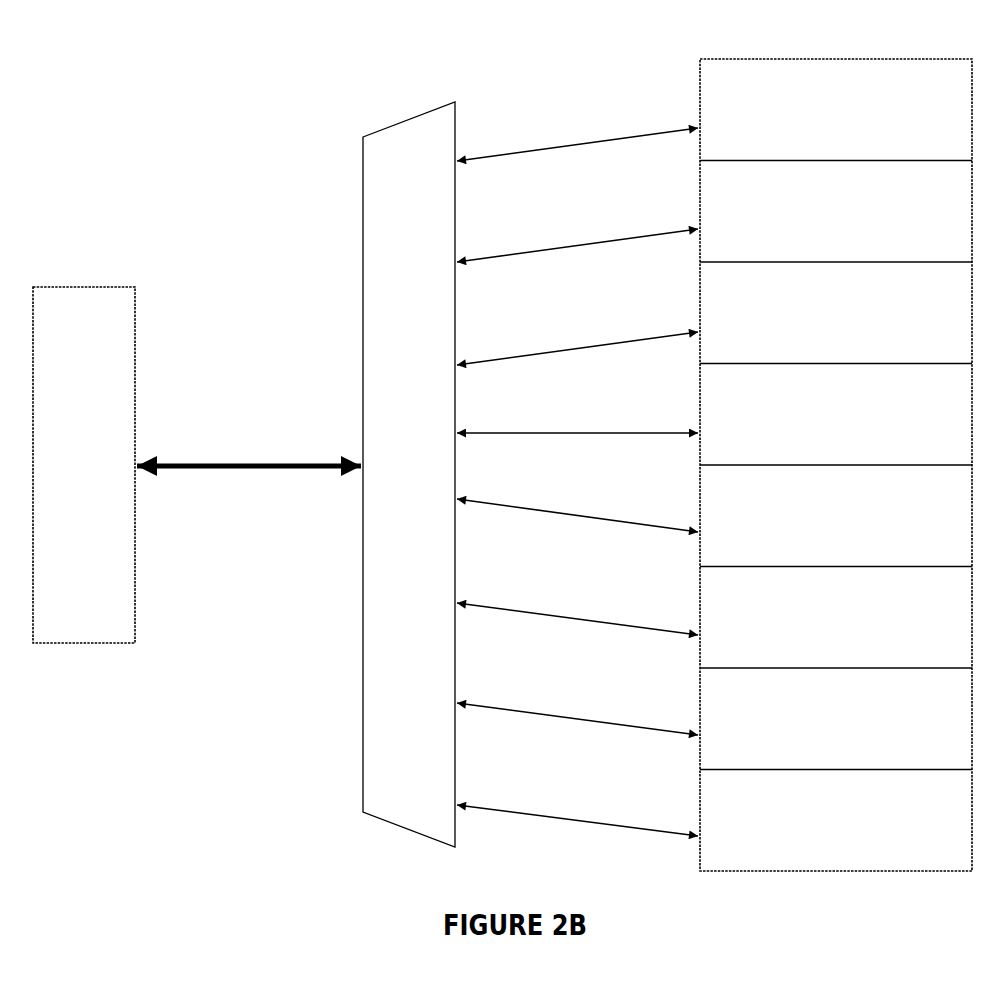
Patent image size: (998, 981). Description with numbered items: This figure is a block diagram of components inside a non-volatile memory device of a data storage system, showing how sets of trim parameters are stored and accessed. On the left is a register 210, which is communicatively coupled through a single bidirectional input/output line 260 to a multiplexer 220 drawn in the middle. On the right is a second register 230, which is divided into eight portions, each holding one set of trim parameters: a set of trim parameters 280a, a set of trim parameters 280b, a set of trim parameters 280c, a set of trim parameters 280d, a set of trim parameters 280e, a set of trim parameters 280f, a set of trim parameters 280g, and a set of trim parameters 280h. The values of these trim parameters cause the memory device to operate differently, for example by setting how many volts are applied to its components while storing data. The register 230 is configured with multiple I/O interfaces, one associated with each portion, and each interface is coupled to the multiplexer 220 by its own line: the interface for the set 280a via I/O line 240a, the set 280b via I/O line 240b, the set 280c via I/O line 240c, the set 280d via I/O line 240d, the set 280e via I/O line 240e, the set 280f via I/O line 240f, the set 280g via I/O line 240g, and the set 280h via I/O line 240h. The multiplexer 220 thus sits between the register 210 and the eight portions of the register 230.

The register 210 is at (84, 465).
The multiplexer 220 is at (409, 474).
The register 230 is at (903, 58).
The I/O line 240a is at (548, 152).
The I/O line 240b is at (526, 252).
The I/O line 240c is at (537, 353).
The I/O line 240d is at (547, 430).
The I/O line 240e is at (548, 511).
The I/O line 240f is at (592, 621).
The I/O line 240g is at (578, 716).
The I/O line 240h is at (590, 820).
The input/output line 260 is at (252, 462).
The set of trim parameters 280a is at (833, 113).
The set of trim parameters 280b is at (833, 214).
The set of trim parameters 280c is at (833, 316).
The set of trim parameters 280d is at (833, 417).
The set of trim parameters 280e is at (833, 519).
The set of trim parameters 280f is at (833, 620).
The set of trim parameters 280g is at (833, 722).
The set of trim parameters 280h is at (833, 823).